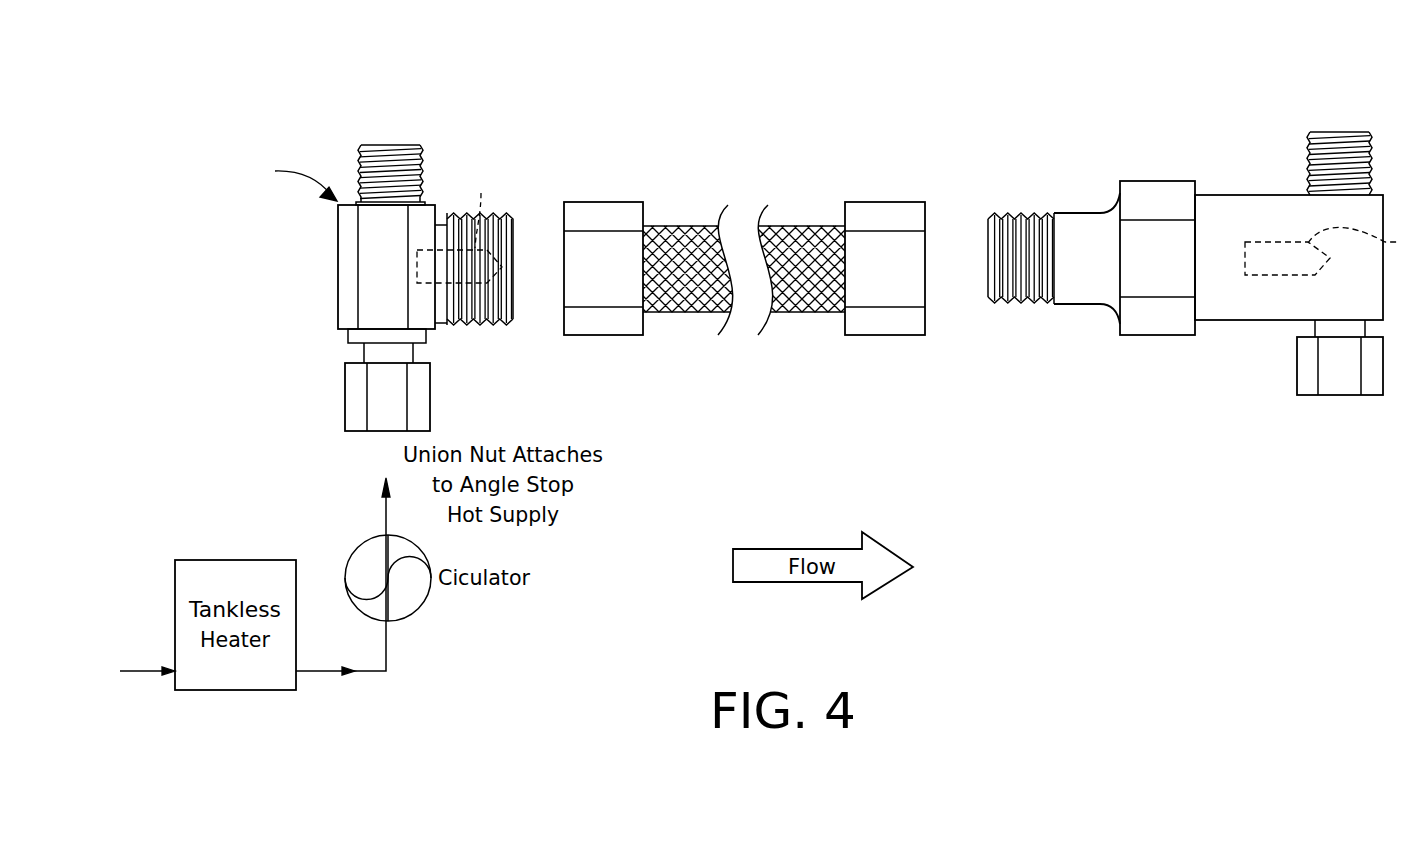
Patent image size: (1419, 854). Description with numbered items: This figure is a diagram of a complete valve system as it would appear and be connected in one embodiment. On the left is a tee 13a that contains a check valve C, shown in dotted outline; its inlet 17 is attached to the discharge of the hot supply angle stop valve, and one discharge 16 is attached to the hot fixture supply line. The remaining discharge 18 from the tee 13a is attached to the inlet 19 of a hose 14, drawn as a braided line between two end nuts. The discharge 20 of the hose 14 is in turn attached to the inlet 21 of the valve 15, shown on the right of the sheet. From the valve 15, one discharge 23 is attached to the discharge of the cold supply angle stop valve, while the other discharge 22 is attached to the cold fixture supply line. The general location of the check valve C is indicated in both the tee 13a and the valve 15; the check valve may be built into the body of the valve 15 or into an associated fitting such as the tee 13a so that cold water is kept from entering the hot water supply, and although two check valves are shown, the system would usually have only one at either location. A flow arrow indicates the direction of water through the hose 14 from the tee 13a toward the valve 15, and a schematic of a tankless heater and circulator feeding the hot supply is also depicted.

The tee 13a is at (342, 265).
The hose 14 is at (689, 228).
The valve 15 is at (1240, 212).
The discharge 16 is at (388, 150).
The inlet 17 is at (381, 400).
The discharge 18 is at (488, 330).
The inlet 19 is at (599, 207).
The discharge 20 is at (888, 207).
The inlet 21 is at (1013, 305).
The discharge 22 is at (1338, 150).
The discharge 23 is at (1300, 372).